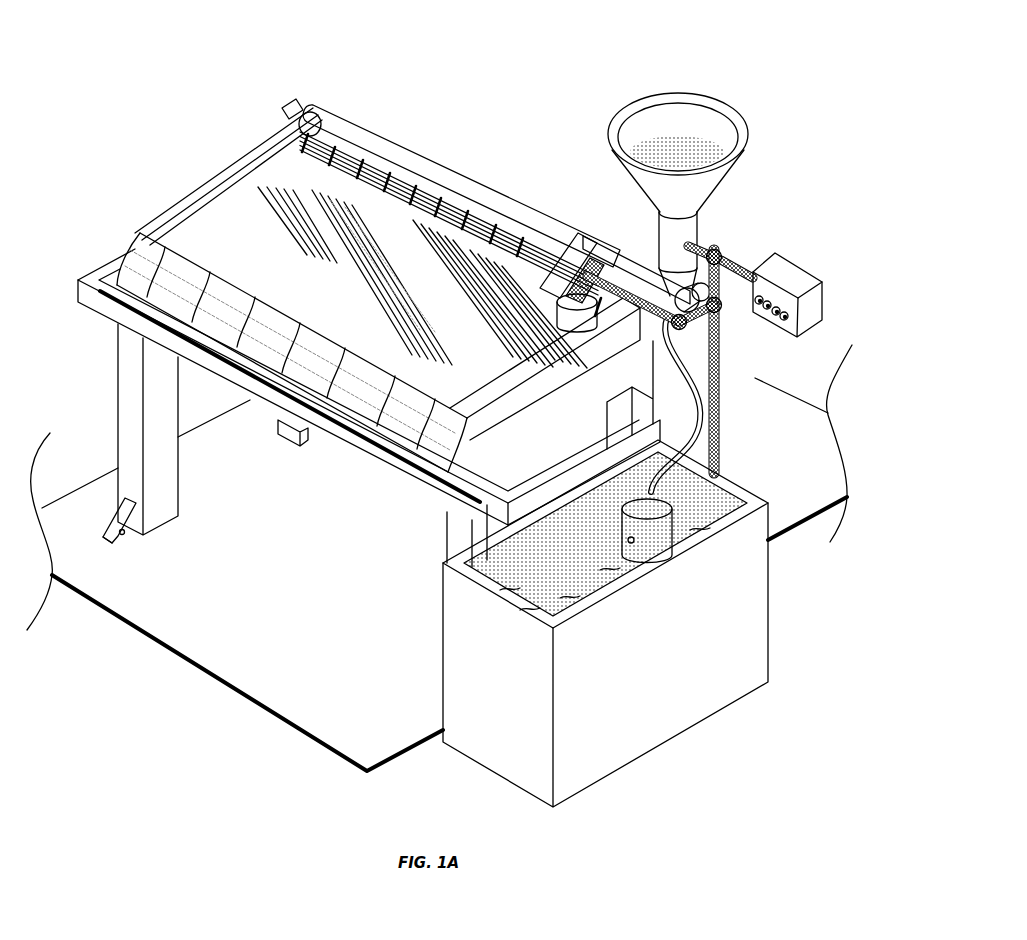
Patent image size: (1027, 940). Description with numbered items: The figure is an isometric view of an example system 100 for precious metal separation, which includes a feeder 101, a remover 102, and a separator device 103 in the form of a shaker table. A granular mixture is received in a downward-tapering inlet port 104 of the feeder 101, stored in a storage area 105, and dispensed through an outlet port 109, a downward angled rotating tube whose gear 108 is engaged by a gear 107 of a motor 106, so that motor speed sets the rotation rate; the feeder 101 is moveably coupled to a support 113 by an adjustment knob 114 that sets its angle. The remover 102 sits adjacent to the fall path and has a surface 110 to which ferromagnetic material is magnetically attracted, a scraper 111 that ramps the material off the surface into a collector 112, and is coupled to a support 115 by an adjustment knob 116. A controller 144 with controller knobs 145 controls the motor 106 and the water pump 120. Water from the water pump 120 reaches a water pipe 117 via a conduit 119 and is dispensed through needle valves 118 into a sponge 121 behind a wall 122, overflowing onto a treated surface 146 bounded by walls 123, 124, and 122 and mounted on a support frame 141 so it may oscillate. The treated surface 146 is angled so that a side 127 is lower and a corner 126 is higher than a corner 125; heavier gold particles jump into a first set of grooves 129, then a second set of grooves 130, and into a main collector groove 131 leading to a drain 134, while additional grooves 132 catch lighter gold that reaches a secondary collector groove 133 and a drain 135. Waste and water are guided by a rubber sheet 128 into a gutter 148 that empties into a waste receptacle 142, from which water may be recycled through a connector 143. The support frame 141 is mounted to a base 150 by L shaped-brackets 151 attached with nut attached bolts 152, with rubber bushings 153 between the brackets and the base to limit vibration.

The system 100 is at (145, 42).
The feeder 101 is at (583, 135).
The remover 102 is at (548, 215).
The separator device 103 is at (168, 152).
The inlet port 104 is at (642, 182).
The storage area 105 is at (660, 232).
The motor 106 is at (706, 246).
The gear 107 is at (722, 314).
The gear 108 is at (720, 338).
The outlet port 109 is at (596, 237).
The surface 110 is at (580, 236).
The scraper 111 is at (568, 250).
The collector 112 is at (546, 262).
The support 113 is at (732, 265).
The adjustment knob 114 is at (722, 252).
The support 115 is at (663, 340).
The adjustment knob 116 is at (720, 368).
The water pipe 117 is at (396, 170).
The needle valves 118 is at (368, 152).
The conduit 119 is at (721, 420).
The water pump 120 is at (690, 520).
The sponge 121 is at (313, 106).
The wall 122 is at (292, 108).
The wall 123 is at (470, 402).
The wall 124 is at (180, 205).
The corner 125 is at (320, 122).
The corner 126 is at (282, 150).
The side 127 is at (250, 290).
The rubber sheet 128 is at (200, 270).
The first set of grooves 129 is at (503, 357).
The second set of grooves 130 is at (490, 262).
The main collector groove 131 is at (437, 210).
The additional grooves 132 is at (270, 216).
The secondary collector groove 133 is at (240, 173).
The drain 134 is at (283, 153).
The drain 135 is at (262, 183).
The support frame 141 is at (118, 395).
The waste receptacle 142 is at (452, 651).
The connector 143 is at (680, 548).
The controller 144 is at (796, 270).
The controller knobs 145 is at (782, 334).
The treated surface 146 is at (378, 349).
The gutter 148 is at (78, 283).
The base 150 is at (88, 487).
The L shaped-brackets 151 is at (130, 535).
The nut attached bolts 152 is at (127, 540).
The rubber bushings 153 is at (122, 546).